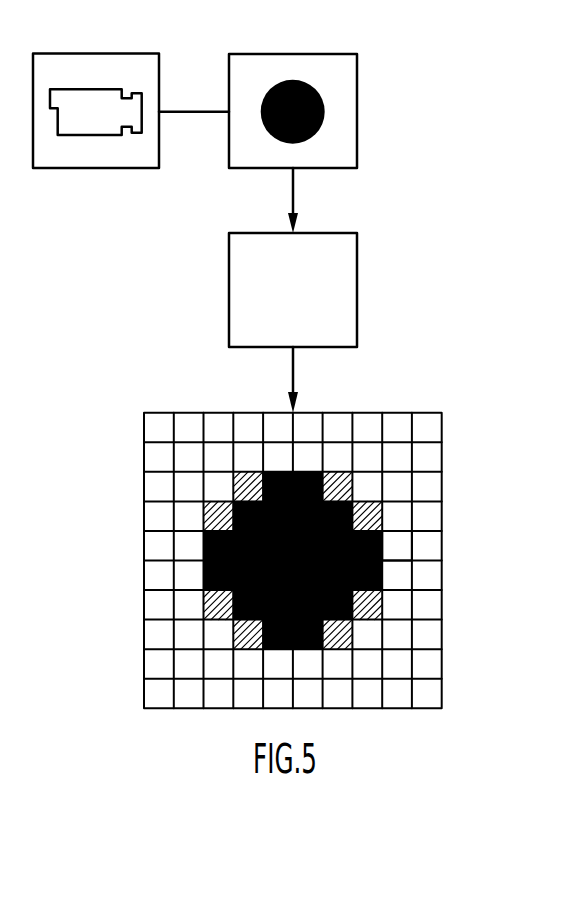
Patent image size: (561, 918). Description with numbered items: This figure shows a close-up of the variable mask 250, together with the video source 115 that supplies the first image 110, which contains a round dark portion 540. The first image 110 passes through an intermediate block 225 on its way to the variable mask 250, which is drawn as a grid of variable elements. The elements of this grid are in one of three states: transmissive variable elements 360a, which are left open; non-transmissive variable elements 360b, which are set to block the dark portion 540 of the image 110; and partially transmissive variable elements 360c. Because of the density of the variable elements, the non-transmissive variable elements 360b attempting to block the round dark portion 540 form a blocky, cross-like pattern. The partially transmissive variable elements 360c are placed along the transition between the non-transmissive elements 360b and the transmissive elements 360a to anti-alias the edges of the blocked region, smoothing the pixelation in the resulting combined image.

The video source 115 is at (160, 88).
The first image 110 is at (358, 88).
The round dark portion 540 is at (310, 82).
The processing unit 225 is at (358, 267).
The variable mask 250 is at (188, 710).
The transmissive variable elements 360a is at (397, 548).
The non-transmissive variable elements 360b is at (203, 542).
The partially transmissive variable elements 360c is at (336, 495).